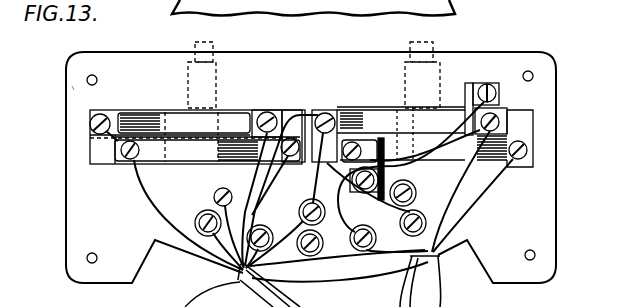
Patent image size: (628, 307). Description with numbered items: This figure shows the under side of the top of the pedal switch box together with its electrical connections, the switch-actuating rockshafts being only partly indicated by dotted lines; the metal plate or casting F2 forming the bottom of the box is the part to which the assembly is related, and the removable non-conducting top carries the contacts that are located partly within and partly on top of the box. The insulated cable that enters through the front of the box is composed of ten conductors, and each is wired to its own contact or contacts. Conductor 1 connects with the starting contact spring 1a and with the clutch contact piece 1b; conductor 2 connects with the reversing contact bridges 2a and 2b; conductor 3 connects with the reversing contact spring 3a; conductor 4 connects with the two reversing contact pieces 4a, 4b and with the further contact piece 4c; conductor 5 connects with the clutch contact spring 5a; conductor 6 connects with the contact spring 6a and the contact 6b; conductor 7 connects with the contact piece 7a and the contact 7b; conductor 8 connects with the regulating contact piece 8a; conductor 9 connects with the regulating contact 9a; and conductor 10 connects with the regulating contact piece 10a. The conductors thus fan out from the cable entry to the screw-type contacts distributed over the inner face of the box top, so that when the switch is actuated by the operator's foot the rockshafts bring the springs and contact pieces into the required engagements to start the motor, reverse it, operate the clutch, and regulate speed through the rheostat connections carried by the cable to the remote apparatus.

The conductor 1 is at (175, 250).
The starting contact spring 1a is at (196, 137).
The clutch contact piece 1b is at (138, 162).
The conductor 2 is at (470, 188).
The reversing contact bridge 2a is at (487, 84).
The reversing contact bridge 2b is at (384, 136).
The conductor 3 is at (488, 200).
The reversing contact spring 3a is at (522, 141).
The conductor 4 is at (402, 262).
The reversing contact piece 4a is at (352, 140).
The reversing contact piece 4b is at (500, 110).
The contact piece 4c is at (365, 252).
The conductor 5 is at (270, 185).
The clutch contact spring 5a is at (290, 118).
The conductor 6 is at (229, 220).
The contact spring 6a is at (324, 114).
The contact 6b is at (285, 200).
The conductor 7 is at (329, 188).
The contact piece 7a is at (270, 113).
The contact 7b is at (425, 216).
The conductor 8 is at (259, 251).
The regulating contact piece 8a is at (303, 254).
The conductor 9 is at (232, 262).
The regulating contact 9a is at (197, 214).
The conductor 10 is at (355, 272).
The regulating contact piece 10a is at (337, 261).
The metal plate or casting F2 is at (76, 88).